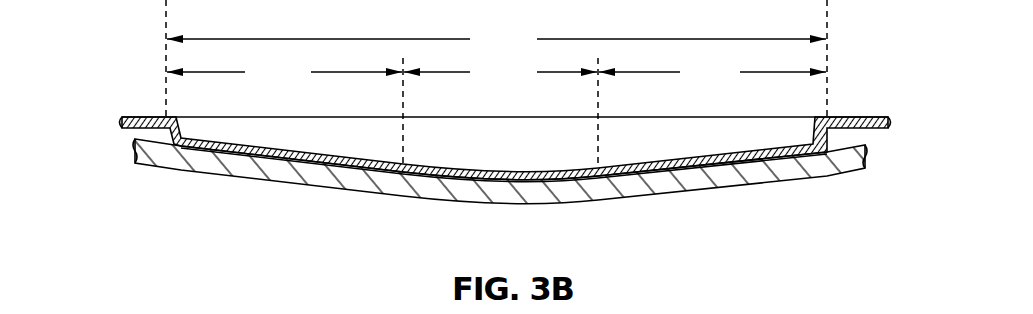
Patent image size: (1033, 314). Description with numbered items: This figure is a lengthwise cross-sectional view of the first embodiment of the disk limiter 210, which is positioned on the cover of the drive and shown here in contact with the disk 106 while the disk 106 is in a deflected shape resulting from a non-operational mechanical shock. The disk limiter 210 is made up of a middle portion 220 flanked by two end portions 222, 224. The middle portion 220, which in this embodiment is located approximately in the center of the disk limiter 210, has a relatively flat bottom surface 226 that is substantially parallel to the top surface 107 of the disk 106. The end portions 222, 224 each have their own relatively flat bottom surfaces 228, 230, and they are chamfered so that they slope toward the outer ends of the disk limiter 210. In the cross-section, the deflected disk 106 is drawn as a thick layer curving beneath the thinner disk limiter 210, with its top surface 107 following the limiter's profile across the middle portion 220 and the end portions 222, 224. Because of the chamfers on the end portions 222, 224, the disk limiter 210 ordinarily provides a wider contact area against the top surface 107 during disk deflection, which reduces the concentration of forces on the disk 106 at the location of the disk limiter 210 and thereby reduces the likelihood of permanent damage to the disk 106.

The disk 106 is at (832, 155).
The top surface 107 is at (154, 136).
The disk limiter 210 is at (496, 37).
The middle portion 220 is at (500, 67).
The end portion 222 is at (284, 64).
The end portion 224 is at (712, 67).
The bottom surface 226 is at (480, 177).
The bottom surface 228 is at (250, 158).
The bottom surface 230 is at (688, 168).